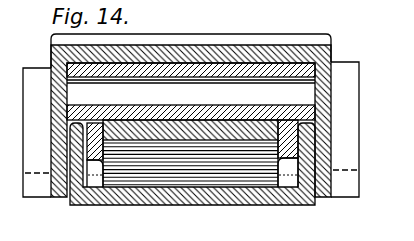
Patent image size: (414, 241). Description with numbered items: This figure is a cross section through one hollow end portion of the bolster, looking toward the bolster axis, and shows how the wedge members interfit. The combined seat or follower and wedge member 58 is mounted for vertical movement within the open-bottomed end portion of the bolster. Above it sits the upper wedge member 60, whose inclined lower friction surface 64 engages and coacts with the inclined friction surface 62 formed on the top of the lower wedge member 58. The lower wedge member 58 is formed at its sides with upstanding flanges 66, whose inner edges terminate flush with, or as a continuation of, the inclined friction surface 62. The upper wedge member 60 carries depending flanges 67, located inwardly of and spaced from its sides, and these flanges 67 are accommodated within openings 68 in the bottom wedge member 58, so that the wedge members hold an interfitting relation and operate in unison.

The combined seat or follower and wedge member 58 is at (203, 192).
The upper wedge member 60 is at (273, 61).
The inclined friction surface 62 is at (125, 123).
The inclined lower friction surface 64 is at (190, 120).
The upstanding flanges 66 is at (74, 133).
The depending flanges 67 is at (86, 150).
The openings 68 is at (93, 178).